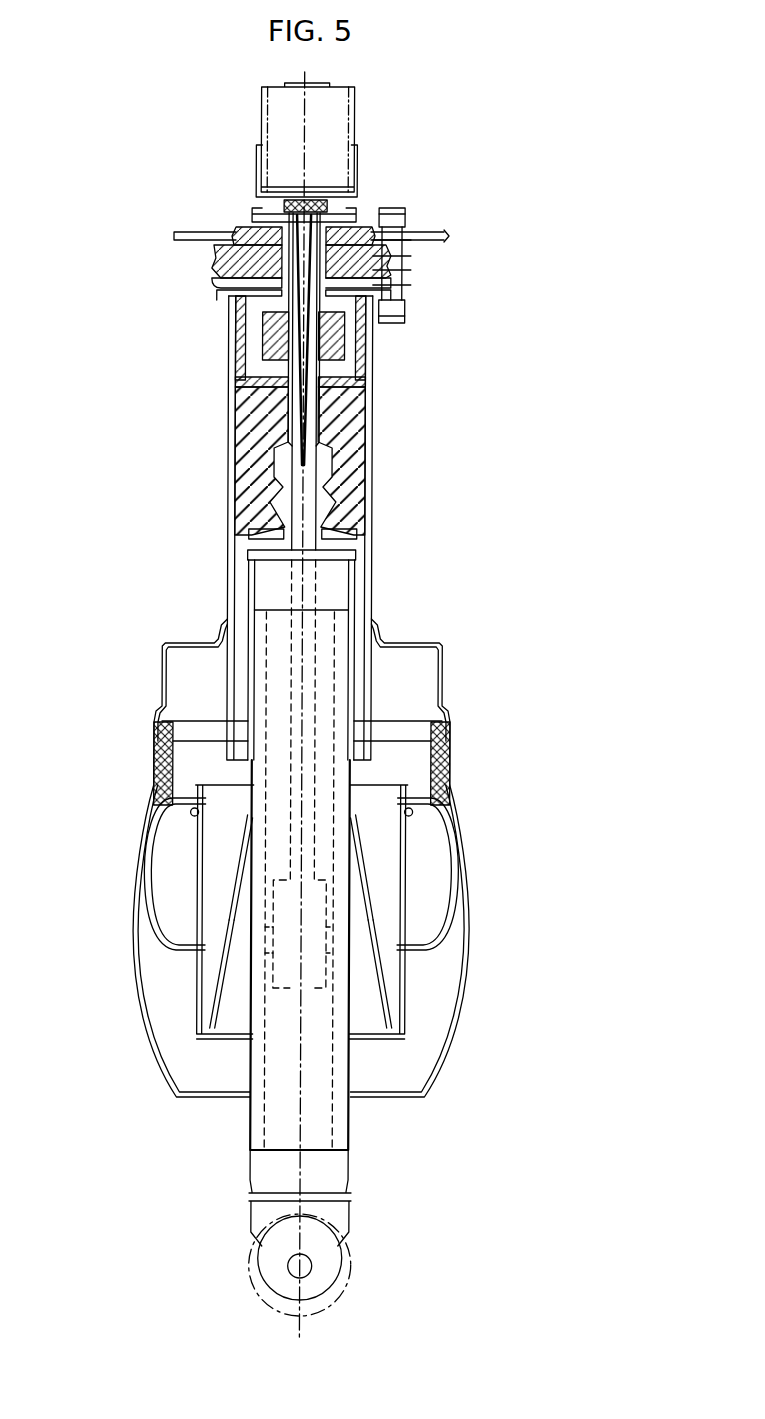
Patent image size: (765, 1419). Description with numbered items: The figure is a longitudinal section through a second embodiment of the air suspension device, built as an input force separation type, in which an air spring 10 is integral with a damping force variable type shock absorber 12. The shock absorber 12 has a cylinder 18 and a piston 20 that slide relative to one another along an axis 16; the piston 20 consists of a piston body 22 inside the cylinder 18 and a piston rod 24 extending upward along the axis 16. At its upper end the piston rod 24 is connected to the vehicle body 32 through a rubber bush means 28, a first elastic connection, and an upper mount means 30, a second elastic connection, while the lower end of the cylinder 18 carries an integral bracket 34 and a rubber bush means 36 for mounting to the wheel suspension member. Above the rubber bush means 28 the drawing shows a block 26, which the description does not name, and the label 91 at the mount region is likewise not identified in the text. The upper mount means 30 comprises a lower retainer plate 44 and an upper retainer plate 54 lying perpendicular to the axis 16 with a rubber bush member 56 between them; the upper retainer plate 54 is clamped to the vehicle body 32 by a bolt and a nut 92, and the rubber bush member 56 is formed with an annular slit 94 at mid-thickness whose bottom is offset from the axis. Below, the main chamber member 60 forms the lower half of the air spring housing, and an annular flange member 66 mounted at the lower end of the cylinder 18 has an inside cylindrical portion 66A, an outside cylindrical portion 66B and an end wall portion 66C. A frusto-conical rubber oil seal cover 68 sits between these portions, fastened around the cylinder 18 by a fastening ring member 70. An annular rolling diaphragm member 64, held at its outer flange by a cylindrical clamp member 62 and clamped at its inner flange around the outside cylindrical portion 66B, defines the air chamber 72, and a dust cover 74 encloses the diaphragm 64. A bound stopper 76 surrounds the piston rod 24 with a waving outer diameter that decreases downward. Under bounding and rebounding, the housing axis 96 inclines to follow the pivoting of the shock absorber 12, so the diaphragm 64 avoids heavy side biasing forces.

The air spring 10 is at (288, 706).
The shock absorber 12 is at (251, 553).
The axis 16 is at (307, 578).
The cylinder 18 is at (352, 677).
The piston 20 is at (314, 822).
The piston body 22 is at (290, 985).
The piston rod 24 is at (358, 553).
The upper mount block 26 is at (352, 104).
The rubber bush means 28 is at (247, 341).
The upper mount means 30 is at (206, 248).
The vehicle body 32 is at (443, 231).
The bracket 34 is at (338, 1215).
The rubber bush means 36 is at (249, 1261).
The lower retainer plate 44 is at (218, 293).
The upper retainer plate 54 is at (236, 231).
The rubber bush member 56 is at (364, 228).
The main chamber member 60 is at (165, 668).
The cylindrical clamp member 62 is at (160, 753).
The annular rolling diaphragm member 64 is at (457, 901).
The annular flange member 66 is at (382, 1013).
The inside cylindrical portion 66A is at (246, 880).
The outside cylindrical portion 66B is at (213, 989).
The end wall portion 66C is at (376, 1016).
The oil seal cover 68 is at (404, 851).
The fastening ring member 70 is at (243, 824).
The air chamber 72 is at (446, 664).
The dust cover 74 is at (465, 979).
The bound stopper 76 is at (353, 438).
The rod sleeve 91 is at (321, 334).
The nut 92 is at (398, 260).
The annular slit 94 is at (213, 263).
The axis 96 is at (242, 504).